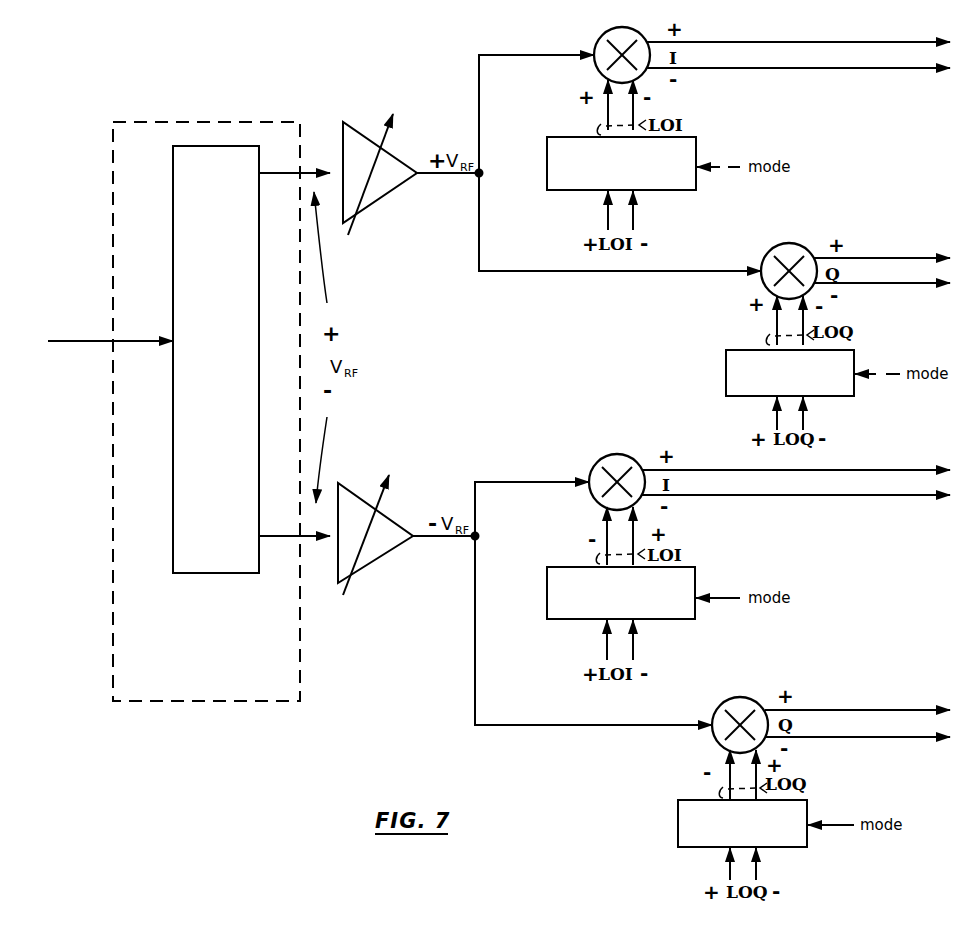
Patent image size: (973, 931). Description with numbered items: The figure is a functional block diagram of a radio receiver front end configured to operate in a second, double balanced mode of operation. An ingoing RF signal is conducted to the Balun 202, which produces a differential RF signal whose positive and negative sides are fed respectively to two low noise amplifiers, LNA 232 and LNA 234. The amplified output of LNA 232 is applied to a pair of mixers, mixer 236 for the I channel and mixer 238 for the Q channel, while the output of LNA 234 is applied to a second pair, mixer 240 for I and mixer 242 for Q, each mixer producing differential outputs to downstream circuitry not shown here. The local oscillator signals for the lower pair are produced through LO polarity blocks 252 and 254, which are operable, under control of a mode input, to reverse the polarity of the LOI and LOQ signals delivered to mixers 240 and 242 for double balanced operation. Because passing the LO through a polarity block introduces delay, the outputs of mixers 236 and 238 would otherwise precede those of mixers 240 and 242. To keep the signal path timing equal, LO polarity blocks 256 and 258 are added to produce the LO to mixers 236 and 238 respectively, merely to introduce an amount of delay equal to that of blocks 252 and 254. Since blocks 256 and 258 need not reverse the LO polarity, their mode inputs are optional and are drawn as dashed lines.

The Balun 202 is at (232, 123).
The low noise amplifier (LNA) 232 is at (392, 151).
The low noise amplifier (LNA) 234 is at (390, 514).
The mixer 236 is at (633, 28).
The mixer 238 is at (799, 244).
The mixer 240 is at (626, 455).
The mixer 242 is at (749, 697).
The LO polarity block 252 is at (684, 567).
The LO polarity block 254 is at (800, 800).
The LO polarity block 256 is at (684, 137).
The LO polarity block 258 is at (849, 350).